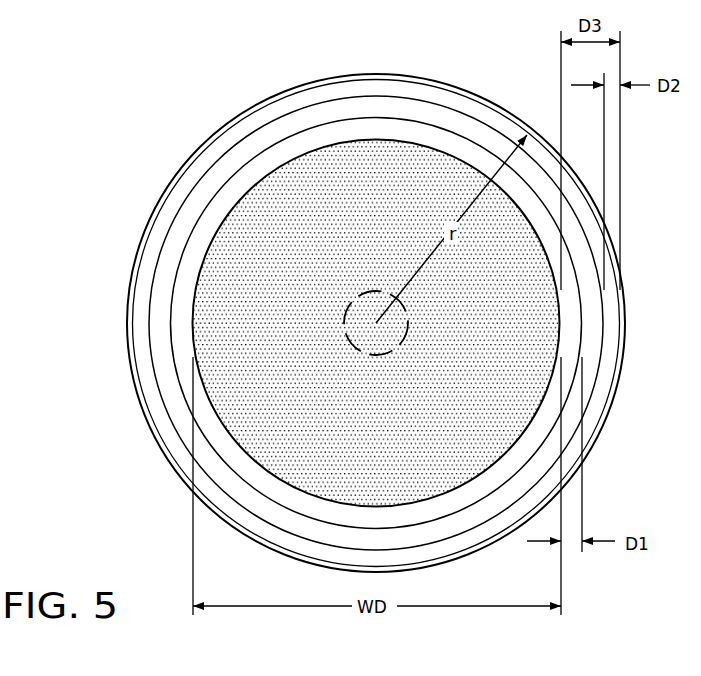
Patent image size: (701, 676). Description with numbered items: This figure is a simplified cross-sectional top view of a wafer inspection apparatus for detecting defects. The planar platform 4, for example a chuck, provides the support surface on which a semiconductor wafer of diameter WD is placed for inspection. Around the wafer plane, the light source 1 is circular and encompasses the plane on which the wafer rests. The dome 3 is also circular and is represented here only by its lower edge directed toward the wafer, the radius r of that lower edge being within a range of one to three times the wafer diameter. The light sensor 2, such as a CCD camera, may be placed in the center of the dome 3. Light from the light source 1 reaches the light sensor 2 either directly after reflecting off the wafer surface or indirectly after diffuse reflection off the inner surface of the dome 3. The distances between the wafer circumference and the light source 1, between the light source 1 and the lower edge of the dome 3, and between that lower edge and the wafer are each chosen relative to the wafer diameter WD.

The light source 1 is at (156, 328).
The light sensor 2 is at (341, 333).
The dome 3 is at (229, 117).
The planar platform 4 is at (383, 252).